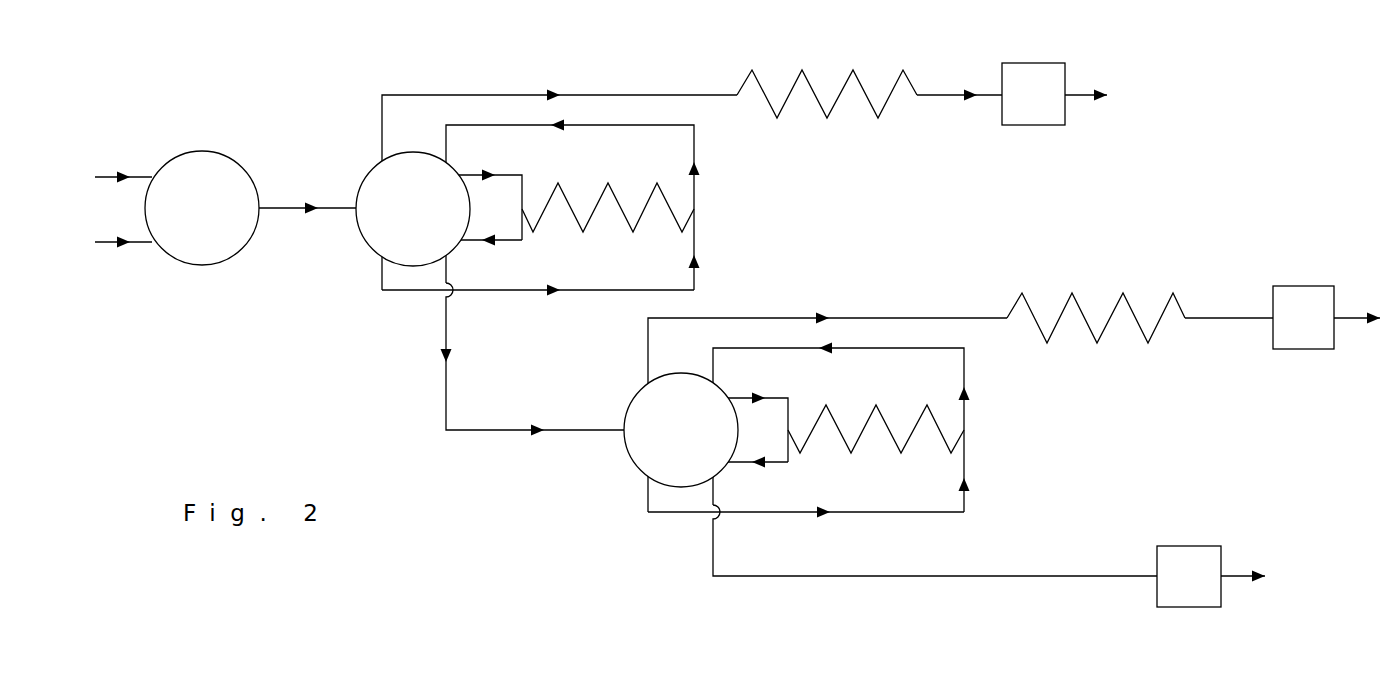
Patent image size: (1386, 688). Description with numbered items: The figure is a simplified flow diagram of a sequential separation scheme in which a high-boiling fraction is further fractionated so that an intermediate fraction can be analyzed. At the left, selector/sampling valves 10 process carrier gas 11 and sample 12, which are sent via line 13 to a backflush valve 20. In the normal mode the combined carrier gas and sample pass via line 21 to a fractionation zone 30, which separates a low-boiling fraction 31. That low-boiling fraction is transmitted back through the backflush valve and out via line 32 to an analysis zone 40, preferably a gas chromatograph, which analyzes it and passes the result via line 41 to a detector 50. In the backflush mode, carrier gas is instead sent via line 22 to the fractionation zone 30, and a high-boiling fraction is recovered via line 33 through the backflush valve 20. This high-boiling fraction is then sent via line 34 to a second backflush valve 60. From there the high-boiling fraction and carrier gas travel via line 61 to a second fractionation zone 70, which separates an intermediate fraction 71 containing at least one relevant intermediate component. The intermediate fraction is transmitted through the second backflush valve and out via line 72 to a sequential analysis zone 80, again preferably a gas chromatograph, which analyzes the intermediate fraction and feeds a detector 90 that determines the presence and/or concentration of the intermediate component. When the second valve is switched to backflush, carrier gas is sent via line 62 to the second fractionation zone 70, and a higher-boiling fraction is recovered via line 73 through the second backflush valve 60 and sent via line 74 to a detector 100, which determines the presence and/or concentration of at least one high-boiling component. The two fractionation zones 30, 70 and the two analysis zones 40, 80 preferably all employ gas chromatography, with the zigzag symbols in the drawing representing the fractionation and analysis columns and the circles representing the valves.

The selector/sampling valves 10 is at (200, 151).
The carrier gas 11 is at (140, 177).
The sample 12 is at (137, 243).
The line to backflush valve 13 is at (289, 208).
The backflush valve 20 is at (358, 225).
The line to fractionation zone 21 is at (484, 175).
The carrier gas backflush line 22 is at (530, 290).
The fractionation zone 30 is at (569, 192).
The low-boiling fraction 31 is at (694, 145).
The line to analysis zone 32 is at (485, 95).
The high-boiling fraction recovery line 33 is at (478, 240).
The line to second backflush valve 34 is at (446, 385).
The analysis zone 40 is at (803, 72).
The line to detector 41 is at (947, 96).
The detector 50 is at (1040, 63).
The second backflush valve 60 is at (625, 440).
The line to second fractionation zone 61 is at (785, 398).
The second carrier gas backflush line 62 is at (893, 512).
The second fractionation zone 70 is at (853, 450).
The intermediate fraction 71 is at (890, 348).
The line to sequential analysis zone 72 is at (845, 318).
The higher-boiling fraction recovery line 73 is at (781, 462).
The line to detector 74 is at (890, 577).
The sequential analysis zone 80 is at (1073, 293).
The detector 90 is at (1293, 286).
The detector 100 is at (1190, 546).